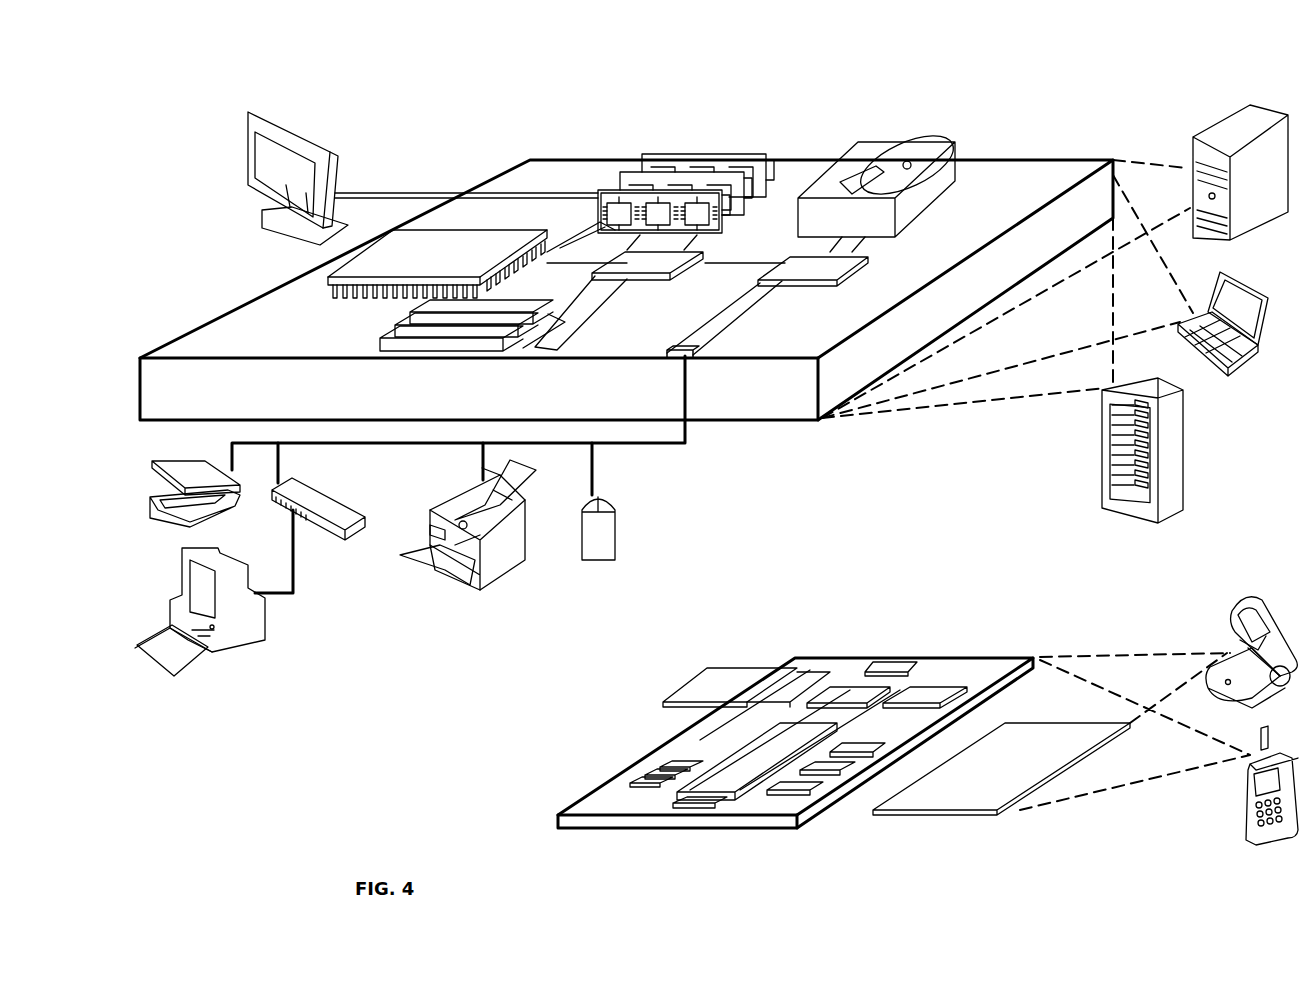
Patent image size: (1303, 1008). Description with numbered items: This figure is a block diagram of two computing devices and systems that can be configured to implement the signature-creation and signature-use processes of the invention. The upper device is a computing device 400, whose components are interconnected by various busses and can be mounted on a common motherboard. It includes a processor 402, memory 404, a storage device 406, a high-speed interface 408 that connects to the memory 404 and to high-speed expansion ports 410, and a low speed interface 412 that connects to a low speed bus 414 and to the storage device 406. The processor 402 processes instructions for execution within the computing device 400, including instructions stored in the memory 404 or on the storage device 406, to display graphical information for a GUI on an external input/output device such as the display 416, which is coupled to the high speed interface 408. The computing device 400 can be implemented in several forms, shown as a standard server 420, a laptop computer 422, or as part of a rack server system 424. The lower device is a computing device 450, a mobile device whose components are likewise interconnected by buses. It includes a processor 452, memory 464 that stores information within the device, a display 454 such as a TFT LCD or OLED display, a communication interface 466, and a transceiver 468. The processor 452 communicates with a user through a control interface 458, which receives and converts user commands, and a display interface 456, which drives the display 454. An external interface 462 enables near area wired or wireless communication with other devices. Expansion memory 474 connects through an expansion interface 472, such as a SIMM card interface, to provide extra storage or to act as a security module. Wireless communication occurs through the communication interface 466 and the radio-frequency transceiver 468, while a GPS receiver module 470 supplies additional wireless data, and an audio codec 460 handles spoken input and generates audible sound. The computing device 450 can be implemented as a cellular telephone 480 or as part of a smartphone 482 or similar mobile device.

The computing device 400 is at (435, 76).
The processor 402 is at (330, 280).
The memory 404 is at (656, 160).
The storage device 406 is at (885, 152).
The high-speed interface 408 is at (620, 262).
The high-speed expansion ports 410 is at (400, 326).
The low speed interface 412 is at (812, 266).
The low speed bus 414 is at (693, 360).
The display 416 is at (247, 118).
The standard server 420 is at (1192, 146).
The laptop computer 422 is at (1220, 282).
The rack server system 424 is at (1102, 482).
The computing device 450 is at (775, 631).
The processor 452 is at (735, 800).
The display 454 is at (997, 814).
The display interface 456 is at (808, 795).
The control interface 458 is at (838, 776).
The audio codec 460 is at (862, 758).
The external interface 462 is at (695, 808).
The memory 464 is at (645, 778).
The communication interface 466 is at (848, 695).
The transceiver 468 is at (925, 692).
The GPS receiver module 470 is at (893, 665).
The expansion interface 472 is at (773, 670).
The expansion memory 474 is at (707, 670).
The cellular telephone 480 is at (1272, 604).
The smartphone 482 is at (1258, 748).